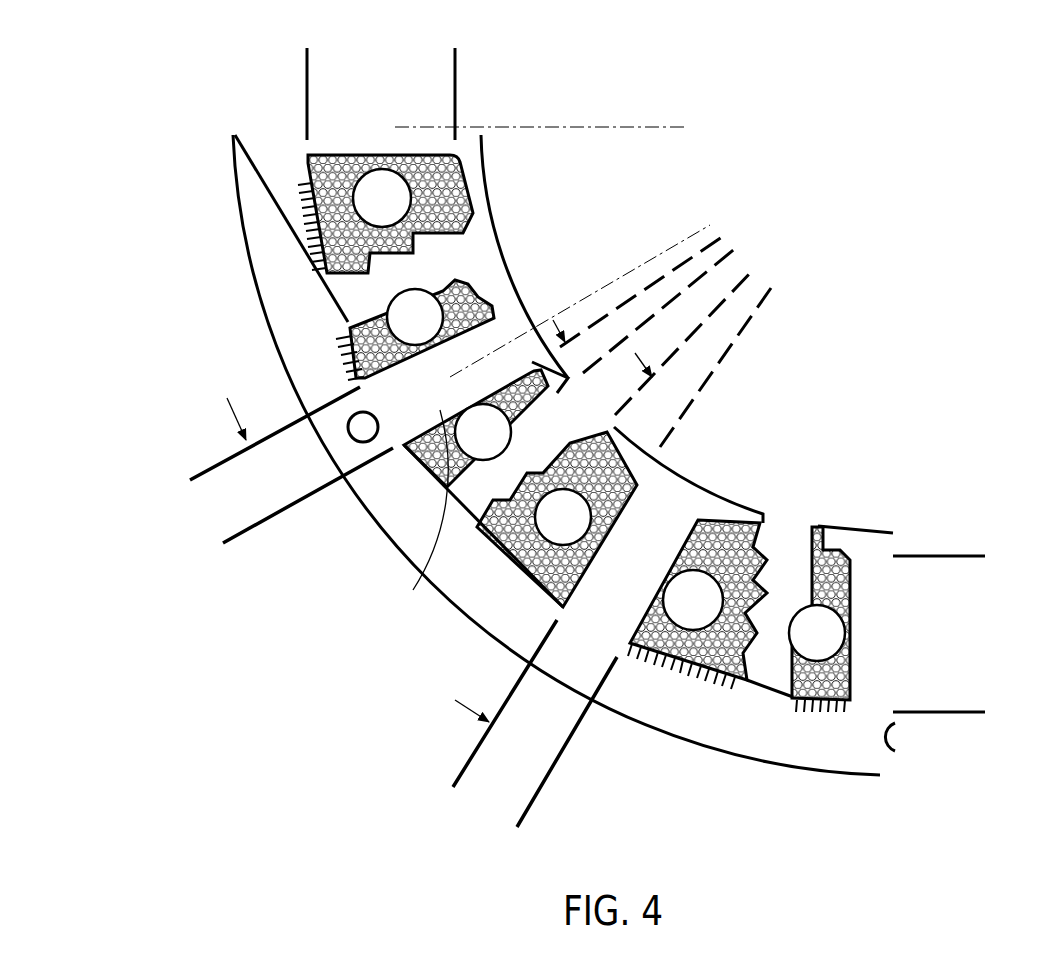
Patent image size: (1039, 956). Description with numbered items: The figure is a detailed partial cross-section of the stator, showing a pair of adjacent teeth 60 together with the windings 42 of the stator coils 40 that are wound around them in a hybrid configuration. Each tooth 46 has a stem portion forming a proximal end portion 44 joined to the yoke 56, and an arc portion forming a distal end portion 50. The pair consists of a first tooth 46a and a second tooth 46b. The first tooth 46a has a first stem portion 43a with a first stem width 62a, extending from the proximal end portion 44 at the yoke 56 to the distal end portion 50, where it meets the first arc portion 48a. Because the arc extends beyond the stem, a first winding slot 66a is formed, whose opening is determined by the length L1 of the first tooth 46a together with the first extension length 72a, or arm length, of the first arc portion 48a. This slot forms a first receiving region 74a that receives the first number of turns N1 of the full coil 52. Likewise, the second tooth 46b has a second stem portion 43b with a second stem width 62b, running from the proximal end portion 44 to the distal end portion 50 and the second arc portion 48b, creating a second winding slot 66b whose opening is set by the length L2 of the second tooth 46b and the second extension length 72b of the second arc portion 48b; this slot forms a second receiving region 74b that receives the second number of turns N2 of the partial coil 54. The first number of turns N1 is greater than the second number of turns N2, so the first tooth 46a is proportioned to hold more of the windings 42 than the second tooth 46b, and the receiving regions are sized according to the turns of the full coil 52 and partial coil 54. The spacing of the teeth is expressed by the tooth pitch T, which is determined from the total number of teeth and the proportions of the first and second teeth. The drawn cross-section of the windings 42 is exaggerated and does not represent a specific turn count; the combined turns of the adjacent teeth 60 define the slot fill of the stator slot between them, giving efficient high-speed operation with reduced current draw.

The stator coils 40 is at (357, 494).
The windings 42 is at (797, 710).
The first stem portion 43a is at (812, 535).
The second stem portion 43b is at (352, 327).
The proximal end portion 44 is at (586, 614).
The tooth 46 is at (524, 426).
The first tooth 46a is at (742, 502).
The second tooth 46b is at (402, 378).
The first arc portion 48a is at (762, 535).
The second arc portion 48b is at (510, 270).
The distal end portion 50 is at (669, 492).
The full coil 52 is at (540, 592).
The partial coil 54 is at (370, 347).
The yoke 56 is at (697, 724).
The adjacent teeth 60 is at (627, 553).
The first stem width 62a is at (560, 766).
The second stem width 62b is at (285, 516).
The first winding slot 66a is at (758, 697).
The second winding slot 66b is at (198, 333).
The first extension length 72a is at (691, 409).
The second extension length 72b is at (591, 370).
The first receiving region 74a is at (735, 589).
The second receiving region 74b is at (338, 348).
The first number of turns N1 is at (717, 652).
The second number of turns N2 is at (465, 296).
The length of the first tooth L1 is at (450, 92).
The length of the second tooth L2 is at (937, 561).
The tooth pitch T is at (550, 132).